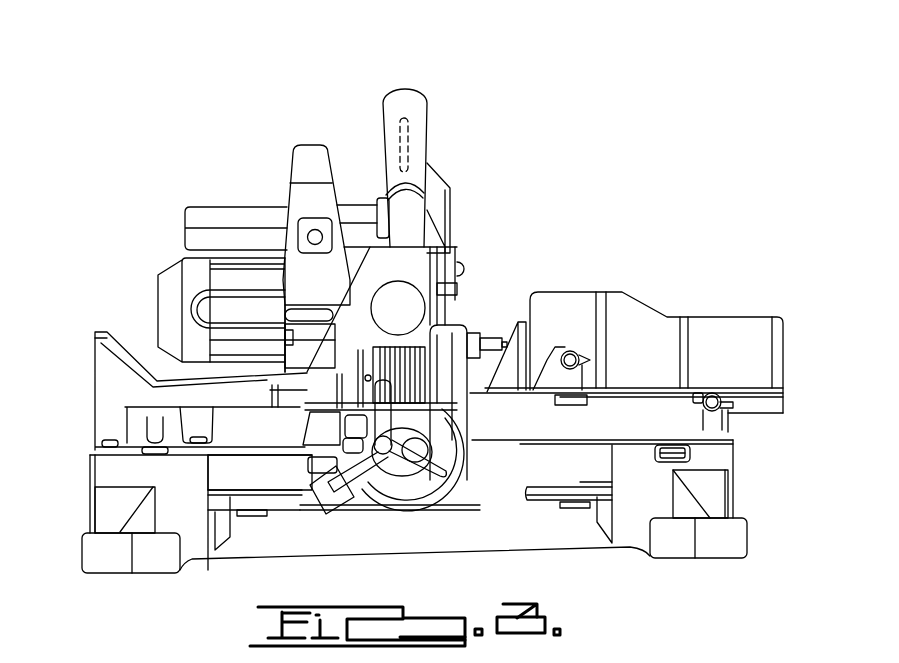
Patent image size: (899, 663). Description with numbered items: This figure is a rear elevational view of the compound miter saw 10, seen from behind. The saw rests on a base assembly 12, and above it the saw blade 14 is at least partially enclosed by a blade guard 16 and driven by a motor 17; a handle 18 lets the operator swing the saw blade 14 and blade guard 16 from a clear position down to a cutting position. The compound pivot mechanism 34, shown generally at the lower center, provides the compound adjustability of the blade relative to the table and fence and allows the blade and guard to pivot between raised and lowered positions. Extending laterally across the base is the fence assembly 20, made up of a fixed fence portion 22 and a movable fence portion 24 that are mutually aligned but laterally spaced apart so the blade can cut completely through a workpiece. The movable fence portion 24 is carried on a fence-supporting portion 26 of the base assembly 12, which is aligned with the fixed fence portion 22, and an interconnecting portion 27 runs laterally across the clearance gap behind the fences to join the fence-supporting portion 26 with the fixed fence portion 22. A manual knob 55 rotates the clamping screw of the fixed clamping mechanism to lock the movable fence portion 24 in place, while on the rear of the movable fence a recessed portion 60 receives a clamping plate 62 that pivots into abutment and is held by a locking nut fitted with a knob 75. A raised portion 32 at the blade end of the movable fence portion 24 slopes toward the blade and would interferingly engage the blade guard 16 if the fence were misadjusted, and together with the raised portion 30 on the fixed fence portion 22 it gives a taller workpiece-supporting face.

The compound miter saw 10 is at (545, 182).
The base assembly 12 is at (745, 462).
The saw blade 14 is at (407, 130).
The blade guard 16 is at (394, 100).
The motor 17 is at (160, 272).
The handle 18 is at (232, 213).
The fence assembly 20 is at (85, 417).
The fixed fence portion 22 is at (110, 373).
The movable fence portion 24 is at (738, 325).
The fence-supporting portion 26 is at (668, 422).
The interconnecting portion 27 is at (477, 408).
The raised portion 30 is at (95, 342).
The raised portion 32 is at (630, 300).
The compound pivot mechanism 34 is at (444, 450).
The manual knob 55 is at (698, 392).
The recessed portion 60 is at (567, 381).
The clamping plate 62 is at (537, 380).
The knob 75 is at (553, 357).